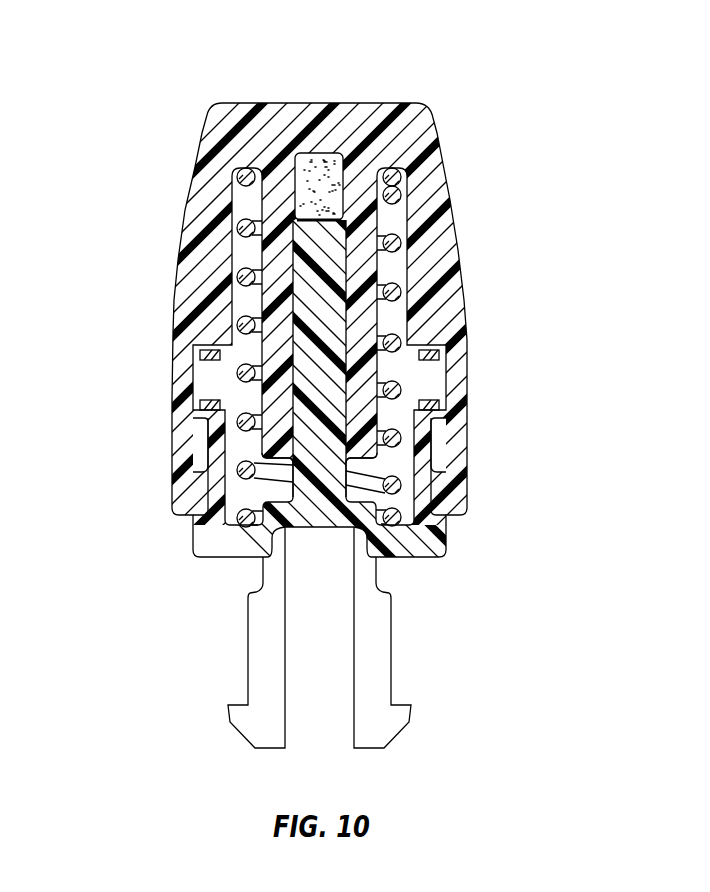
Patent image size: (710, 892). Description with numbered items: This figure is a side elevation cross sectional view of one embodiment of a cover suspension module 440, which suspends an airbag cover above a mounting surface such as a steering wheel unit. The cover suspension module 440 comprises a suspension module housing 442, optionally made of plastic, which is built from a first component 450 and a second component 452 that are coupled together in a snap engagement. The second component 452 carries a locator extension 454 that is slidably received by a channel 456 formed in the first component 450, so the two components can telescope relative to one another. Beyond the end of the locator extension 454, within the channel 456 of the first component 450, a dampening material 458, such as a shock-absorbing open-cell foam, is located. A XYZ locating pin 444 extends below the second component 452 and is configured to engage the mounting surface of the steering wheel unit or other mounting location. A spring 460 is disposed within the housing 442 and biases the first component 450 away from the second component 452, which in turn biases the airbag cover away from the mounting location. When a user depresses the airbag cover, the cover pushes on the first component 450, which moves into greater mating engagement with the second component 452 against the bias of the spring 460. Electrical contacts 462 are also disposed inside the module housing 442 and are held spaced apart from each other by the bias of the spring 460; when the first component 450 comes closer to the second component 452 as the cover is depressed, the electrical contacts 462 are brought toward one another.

The cover suspension module 440 is at (355, 309).
The suspension module housing 442 is at (233, 507).
The XYZ locating pin 444 is at (240, 722).
The first component 450 is at (178, 505).
The second component 452 is at (220, 547).
The locator extension 454 is at (305, 241).
The channel 456 is at (347, 243).
The dampening material 458 is at (330, 160).
The spring 460 is at (403, 292).
The electrical contacts 462 is at (428, 362).